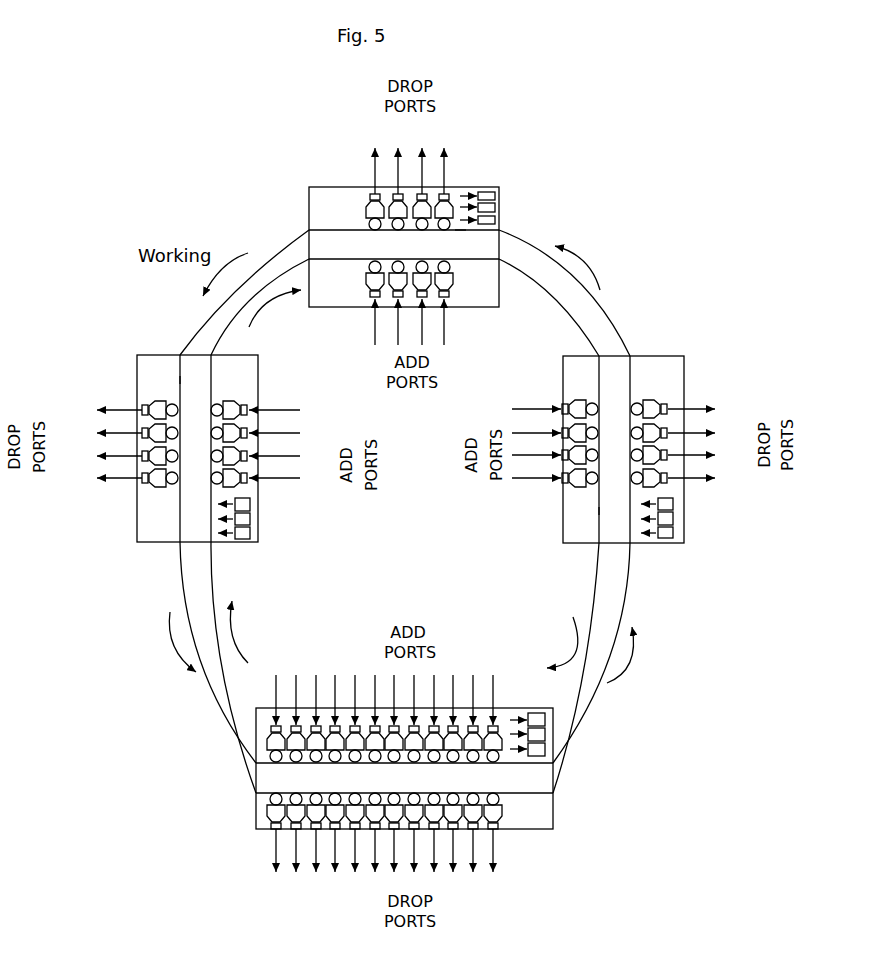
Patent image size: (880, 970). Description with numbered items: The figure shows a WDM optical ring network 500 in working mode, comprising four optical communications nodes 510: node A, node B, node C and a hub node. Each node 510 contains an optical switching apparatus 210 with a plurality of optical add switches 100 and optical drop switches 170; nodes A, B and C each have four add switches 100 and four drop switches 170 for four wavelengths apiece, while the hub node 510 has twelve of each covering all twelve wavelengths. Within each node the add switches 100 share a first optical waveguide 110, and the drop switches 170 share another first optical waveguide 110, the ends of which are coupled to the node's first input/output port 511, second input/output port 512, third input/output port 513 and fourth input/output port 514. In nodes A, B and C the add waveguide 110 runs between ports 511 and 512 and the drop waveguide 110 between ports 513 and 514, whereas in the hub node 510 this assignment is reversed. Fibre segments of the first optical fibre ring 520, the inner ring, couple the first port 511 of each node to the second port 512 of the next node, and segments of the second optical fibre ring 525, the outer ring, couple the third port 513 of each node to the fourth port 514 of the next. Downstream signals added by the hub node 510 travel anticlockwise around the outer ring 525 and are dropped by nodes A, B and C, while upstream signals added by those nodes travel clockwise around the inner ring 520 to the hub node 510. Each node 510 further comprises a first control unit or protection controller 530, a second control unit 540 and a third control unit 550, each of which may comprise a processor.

The optical add switch 100 is at (388, 286).
The first optical waveguide 110 is at (460, 230).
The optical drop switch 170 is at (367, 207).
The optical switching apparatus 210 is at (328, 197).
The optical communications network 500 is at (654, 156).
The optical communications node 510 is at (318, 158).
The first input/output port 511 is at (309, 259).
The second input/output port 512 is at (489, 260).
The third input/output port 513 is at (309, 230).
The fourth input/output port 514 is at (500, 230).
The first optical fibre ring 520 is at (234, 586).
The second optical fibre ring 525 is at (179, 604).
The first control unit 530 is at (490, 192).
The second control unit 540 is at (485, 203).
The third control unit 550 is at (478, 216).